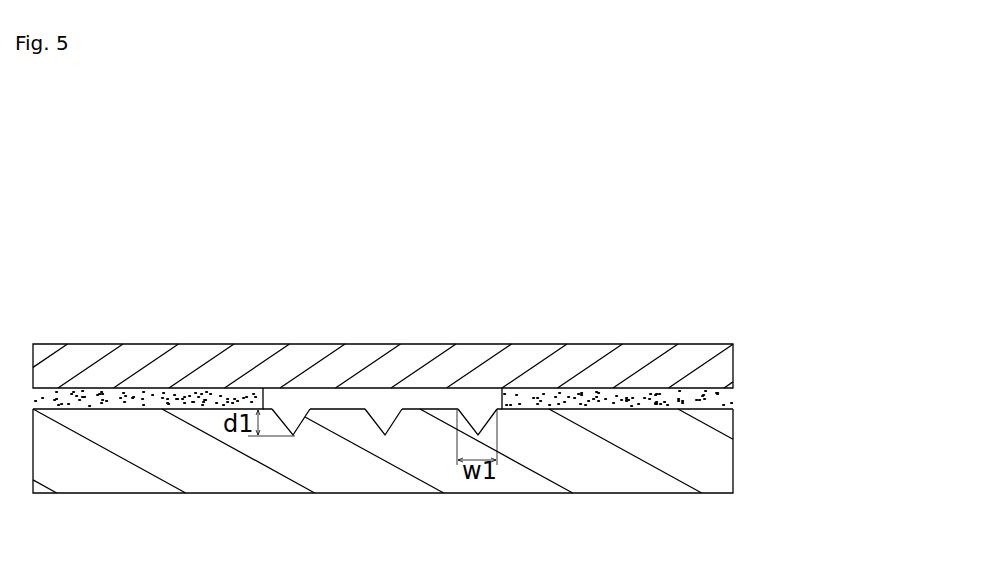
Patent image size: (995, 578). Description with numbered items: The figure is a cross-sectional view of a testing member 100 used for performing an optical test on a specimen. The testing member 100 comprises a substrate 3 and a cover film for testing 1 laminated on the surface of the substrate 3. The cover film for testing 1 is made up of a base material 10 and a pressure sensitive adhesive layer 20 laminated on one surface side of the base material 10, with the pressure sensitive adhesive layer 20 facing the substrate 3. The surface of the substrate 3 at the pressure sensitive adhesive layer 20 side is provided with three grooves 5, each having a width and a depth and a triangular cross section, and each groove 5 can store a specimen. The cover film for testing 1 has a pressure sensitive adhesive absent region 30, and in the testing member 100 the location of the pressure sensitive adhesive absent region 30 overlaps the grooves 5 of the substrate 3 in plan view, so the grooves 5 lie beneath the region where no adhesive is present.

The testing member 100 is at (644, 303).
The cover film for testing 1 is at (848, 346).
The base material 10 is at (723, 365).
The pressure sensitive adhesive layer 20 is at (725, 397).
The pressure sensitive adhesive absent region 30 is at (435, 398).
The substrate 3 is at (723, 453).
The groove 5 is at (295, 418).